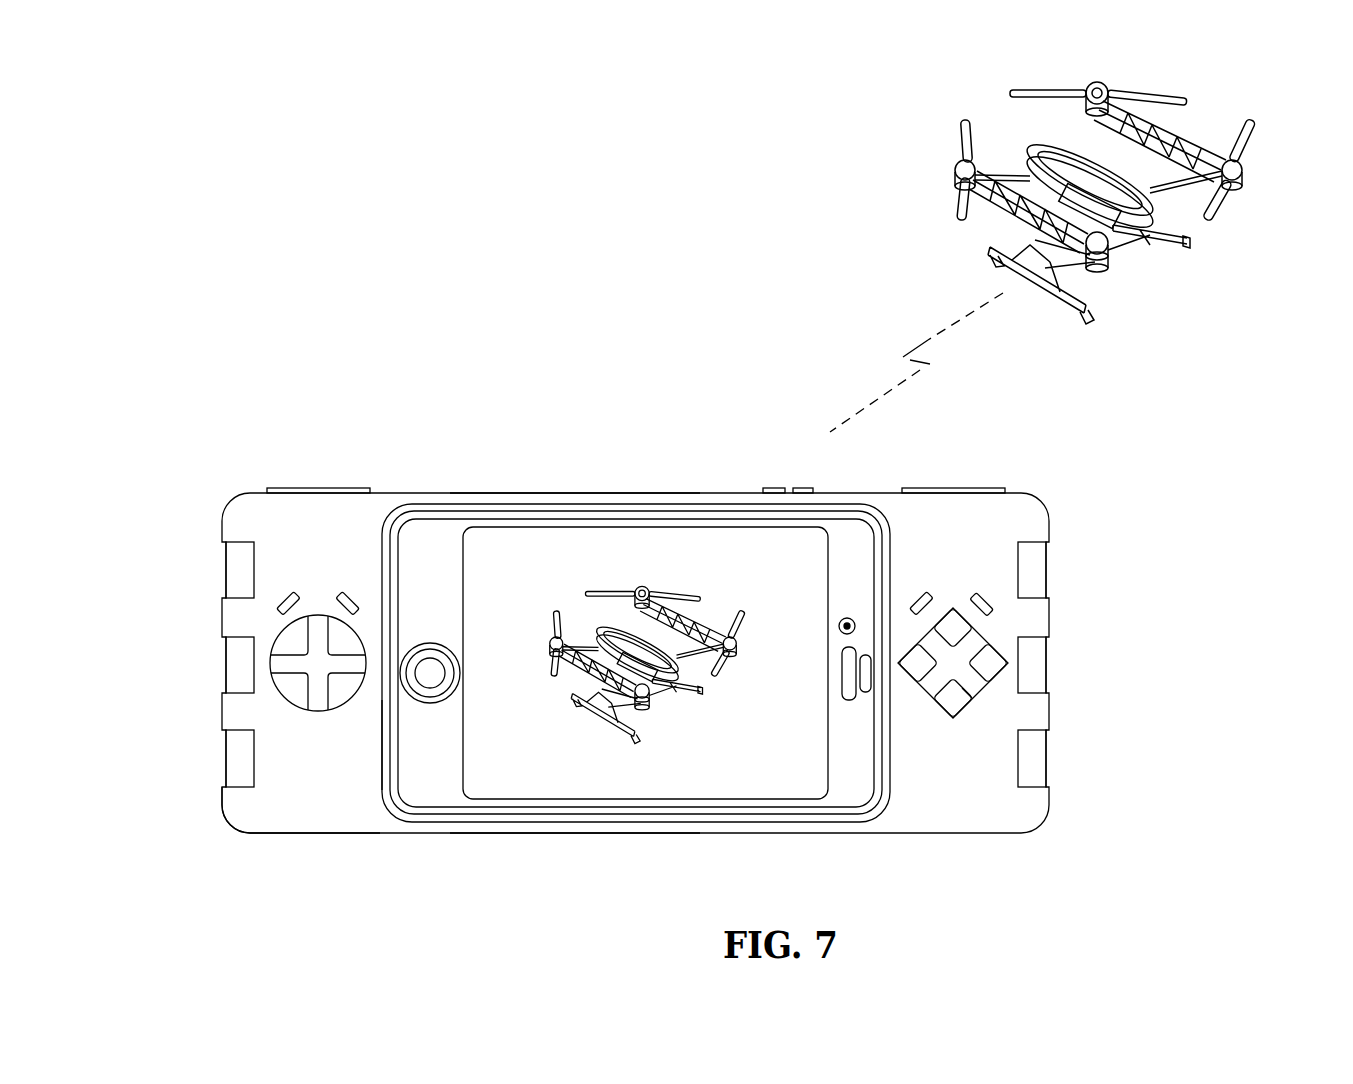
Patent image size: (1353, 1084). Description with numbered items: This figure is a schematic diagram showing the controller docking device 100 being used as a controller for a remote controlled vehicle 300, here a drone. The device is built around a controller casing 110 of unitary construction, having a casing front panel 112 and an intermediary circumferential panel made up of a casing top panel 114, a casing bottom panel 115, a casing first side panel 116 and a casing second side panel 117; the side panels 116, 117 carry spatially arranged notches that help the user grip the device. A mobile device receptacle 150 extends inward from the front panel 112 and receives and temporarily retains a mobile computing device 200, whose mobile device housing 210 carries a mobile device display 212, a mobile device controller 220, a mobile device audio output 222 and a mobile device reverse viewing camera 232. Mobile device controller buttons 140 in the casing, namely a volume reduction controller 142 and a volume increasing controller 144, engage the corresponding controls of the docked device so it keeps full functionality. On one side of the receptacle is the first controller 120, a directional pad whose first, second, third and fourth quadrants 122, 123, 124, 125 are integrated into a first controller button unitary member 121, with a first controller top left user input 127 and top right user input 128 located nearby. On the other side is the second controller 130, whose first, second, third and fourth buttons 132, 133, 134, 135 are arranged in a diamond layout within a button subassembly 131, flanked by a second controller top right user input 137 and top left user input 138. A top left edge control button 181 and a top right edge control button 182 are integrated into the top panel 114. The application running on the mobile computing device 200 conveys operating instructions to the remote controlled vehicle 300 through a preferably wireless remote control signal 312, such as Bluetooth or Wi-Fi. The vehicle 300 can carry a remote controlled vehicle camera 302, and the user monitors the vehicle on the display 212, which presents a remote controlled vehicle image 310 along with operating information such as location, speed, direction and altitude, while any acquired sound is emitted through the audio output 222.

The controller docking device 100 is at (187, 365).
The controller casing 110 is at (972, 793).
The casing front panel 112 is at (305, 802).
The casing top panel 114 is at (565, 490).
The casing bottom panel 115 is at (540, 832).
The casing first side panel 116 is at (225, 755).
The casing second side panel 117 is at (1046, 760).
The first controller 120 is at (295, 650).
The first controller button unitary member 121 is at (277, 643).
The first controller first quadrant 122 is at (335, 632).
The first controller second quadrant 123 is at (365, 662).
The first controller third quadrant 124 is at (318, 702).
The first controller fourth quadrant 125 is at (280, 665).
The first controller top left user input 127 is at (282, 596).
The first controller top right user input 128 is at (354, 596).
The second controller 130 is at (1005, 668).
The button subassembly 131 is at (972, 690).
The second controller first button 132 is at (985, 638).
The second controller second button 133 is at (1004, 677).
The second controller third button 134 is at (967, 715).
The second controller fourth button 135 is at (908, 678).
The second controller top right user input 137 is at (988, 598).
The second controller top left user input 138 is at (920, 597).
The mobile device controller buttons 140 is at (784, 437).
The volume reduction controller 142 is at (773, 488).
The volume increasing controller 144 is at (829, 467).
The mobile device receptacle 150 is at (385, 765).
The top left edge control button 181 is at (318, 488).
The top right edge control button 182 is at (943, 488).
The mobile computing device 200 is at (674, 711).
The mobile device housing 210 is at (850, 797).
The mobile device display 212 is at (727, 773).
The mobile device controller 220 is at (440, 672).
The mobile device audio output 222 is at (840, 675).
The mobile device reverse viewing camera 232 is at (846, 618).
The remote controlled vehicle 300 is at (1131, 183).
The remote controlled vehicle camera 302 is at (1113, 252).
The remote controlled vehicle image 310 is at (590, 726).
The remote control signal 312 is at (928, 340).